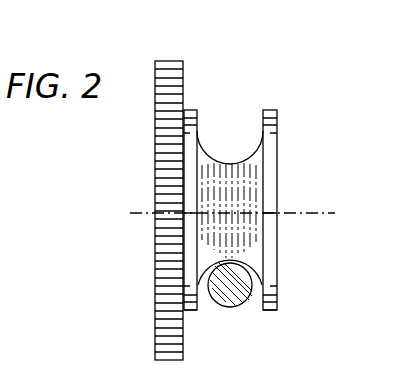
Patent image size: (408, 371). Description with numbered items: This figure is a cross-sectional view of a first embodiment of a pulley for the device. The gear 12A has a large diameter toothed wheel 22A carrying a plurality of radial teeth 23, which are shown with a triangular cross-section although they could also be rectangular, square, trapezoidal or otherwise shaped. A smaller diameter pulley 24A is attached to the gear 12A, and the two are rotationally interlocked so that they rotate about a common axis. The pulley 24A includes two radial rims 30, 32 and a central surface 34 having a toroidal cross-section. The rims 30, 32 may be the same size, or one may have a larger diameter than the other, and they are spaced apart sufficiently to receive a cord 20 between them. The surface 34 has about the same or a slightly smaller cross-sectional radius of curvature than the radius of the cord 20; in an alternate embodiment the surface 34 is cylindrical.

The gear 12A is at (303, 158).
The cord 20 is at (258, 282).
The large diameter toothed wheel 22A is at (158, 61).
The radial teeth 23 is at (155, 182).
The pulley 24A is at (275, 110).
The radial rim 30 is at (188, 311).
The radial rim 32 is at (272, 311).
The central surface 34 is at (226, 162).